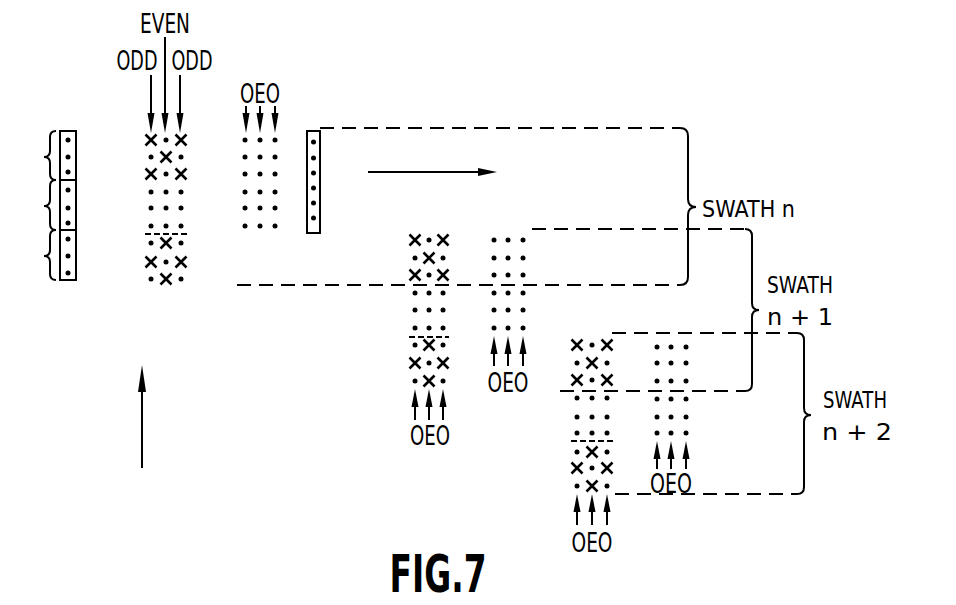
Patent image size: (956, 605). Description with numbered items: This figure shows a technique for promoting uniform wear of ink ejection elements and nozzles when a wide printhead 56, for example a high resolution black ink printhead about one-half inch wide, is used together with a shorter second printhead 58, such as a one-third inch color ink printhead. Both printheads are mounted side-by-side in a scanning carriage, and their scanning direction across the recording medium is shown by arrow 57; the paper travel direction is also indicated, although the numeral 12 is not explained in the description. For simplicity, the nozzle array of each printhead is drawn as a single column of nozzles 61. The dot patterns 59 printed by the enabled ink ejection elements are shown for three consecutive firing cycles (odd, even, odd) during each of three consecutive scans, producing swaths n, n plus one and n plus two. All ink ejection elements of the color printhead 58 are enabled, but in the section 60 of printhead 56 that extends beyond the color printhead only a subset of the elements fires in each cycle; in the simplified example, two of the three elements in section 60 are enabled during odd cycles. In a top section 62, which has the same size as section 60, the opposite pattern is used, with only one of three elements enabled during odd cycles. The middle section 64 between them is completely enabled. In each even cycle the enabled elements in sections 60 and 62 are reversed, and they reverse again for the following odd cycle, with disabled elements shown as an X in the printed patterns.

The paper travel direction 12 is at (142, 405).
The wide printhead 56 is at (70, 131).
The arrow 57 is at (417, 176).
The second printhead 58 is at (312, 131).
The dot patterns 59 is at (262, 248).
The section 60 is at (37, 255).
The nozzles 61 is at (68, 257).
The top section 62 is at (37, 155).
The middle section 64 is at (37, 205).